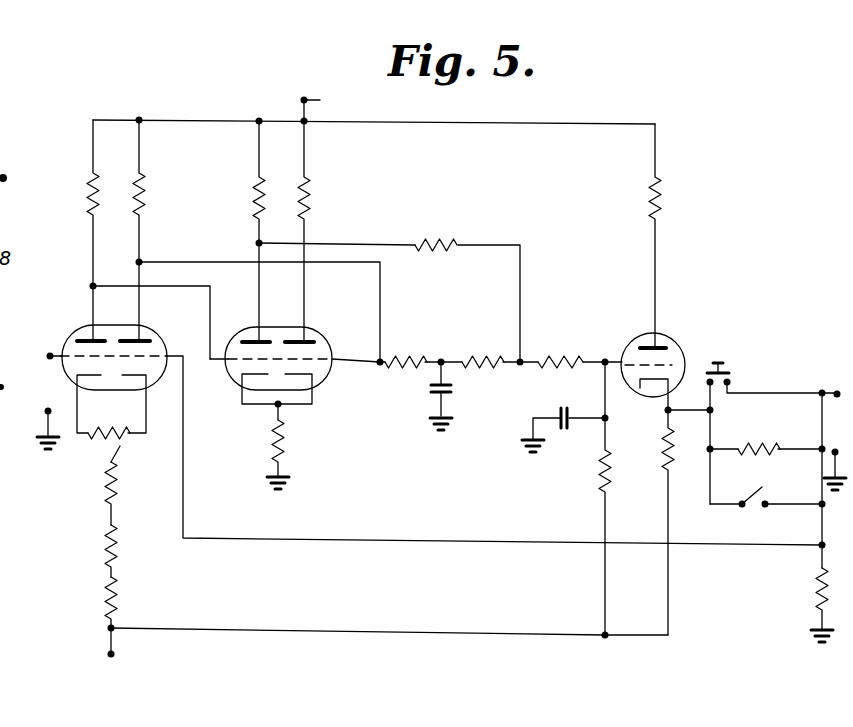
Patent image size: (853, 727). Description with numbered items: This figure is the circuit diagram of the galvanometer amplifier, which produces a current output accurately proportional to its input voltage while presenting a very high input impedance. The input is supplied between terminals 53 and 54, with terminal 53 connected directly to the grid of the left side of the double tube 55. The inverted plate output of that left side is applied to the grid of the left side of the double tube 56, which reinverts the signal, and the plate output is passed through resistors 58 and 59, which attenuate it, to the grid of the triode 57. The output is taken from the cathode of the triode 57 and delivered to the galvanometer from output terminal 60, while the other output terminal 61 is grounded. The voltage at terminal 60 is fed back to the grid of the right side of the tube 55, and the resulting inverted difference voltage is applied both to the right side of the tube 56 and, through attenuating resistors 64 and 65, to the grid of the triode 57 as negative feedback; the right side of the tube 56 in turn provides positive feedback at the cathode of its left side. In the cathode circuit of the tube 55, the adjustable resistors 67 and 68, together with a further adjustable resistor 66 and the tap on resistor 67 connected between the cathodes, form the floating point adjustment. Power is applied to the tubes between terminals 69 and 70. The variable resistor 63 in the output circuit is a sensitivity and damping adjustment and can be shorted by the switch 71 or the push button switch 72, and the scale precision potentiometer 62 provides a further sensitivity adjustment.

The input terminal 53 is at (50, 352).
The input terminal 54 is at (45, 411).
The double tube 55 is at (64, 374).
The double tube 56 is at (313, 333).
The triode 57 is at (680, 345).
The resistor 58 is at (446, 241).
The resistor 59 is at (570, 356).
The output terminal 60 is at (838, 391).
The output terminal 61 is at (846, 440).
The scale precision potentiometer 62 is at (836, 577).
The variable resistor 63 is at (740, 463).
The attenuating resistor 64 is at (401, 356).
The attenuating resistor 65 is at (484, 356).
The variable resistor 66 is at (100, 494).
The resistor 67 is at (116, 443).
The resistor 68 is at (95, 561).
The terminal 69 is at (328, 104).
The terminal 70 is at (114, 657).
The switch 71 is at (754, 496).
The push button switch 72 is at (736, 382).